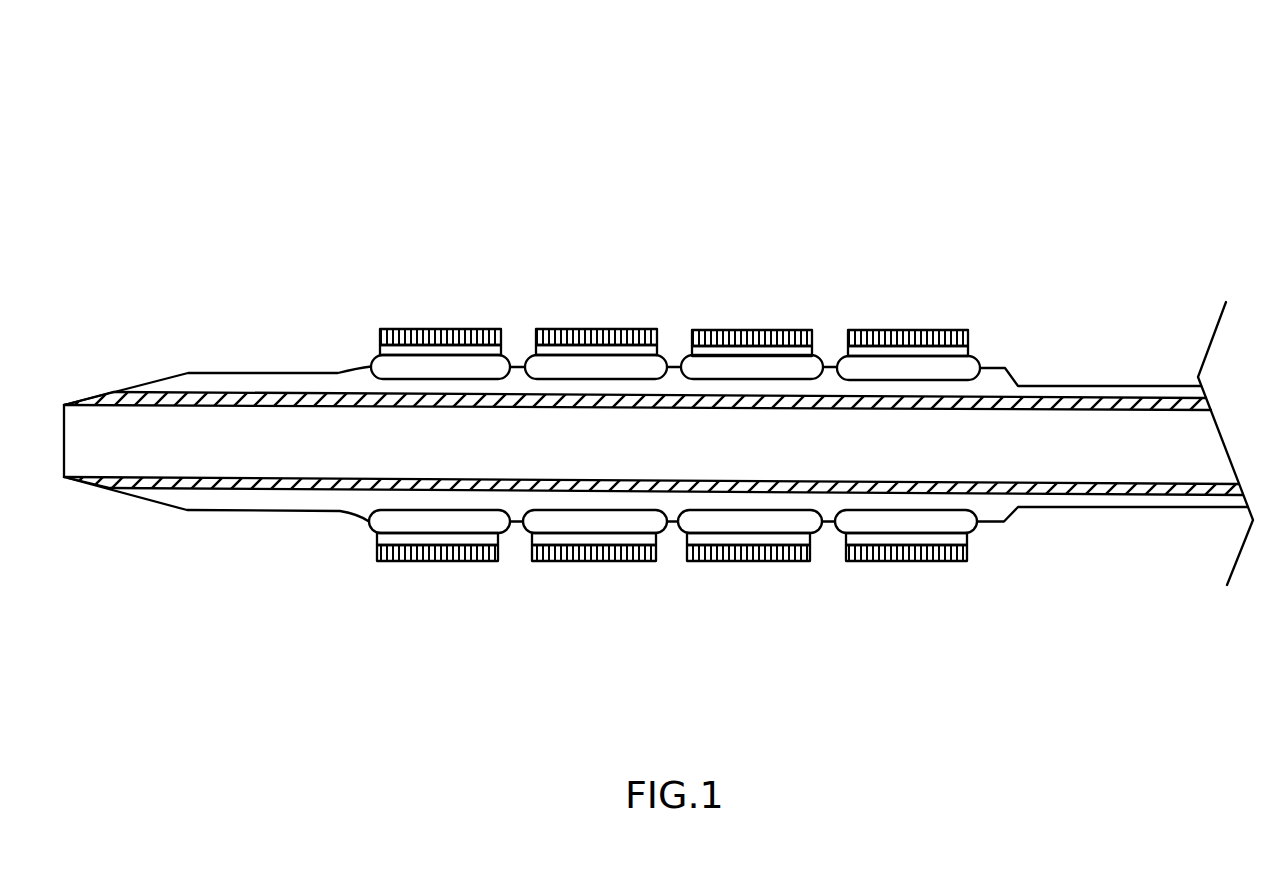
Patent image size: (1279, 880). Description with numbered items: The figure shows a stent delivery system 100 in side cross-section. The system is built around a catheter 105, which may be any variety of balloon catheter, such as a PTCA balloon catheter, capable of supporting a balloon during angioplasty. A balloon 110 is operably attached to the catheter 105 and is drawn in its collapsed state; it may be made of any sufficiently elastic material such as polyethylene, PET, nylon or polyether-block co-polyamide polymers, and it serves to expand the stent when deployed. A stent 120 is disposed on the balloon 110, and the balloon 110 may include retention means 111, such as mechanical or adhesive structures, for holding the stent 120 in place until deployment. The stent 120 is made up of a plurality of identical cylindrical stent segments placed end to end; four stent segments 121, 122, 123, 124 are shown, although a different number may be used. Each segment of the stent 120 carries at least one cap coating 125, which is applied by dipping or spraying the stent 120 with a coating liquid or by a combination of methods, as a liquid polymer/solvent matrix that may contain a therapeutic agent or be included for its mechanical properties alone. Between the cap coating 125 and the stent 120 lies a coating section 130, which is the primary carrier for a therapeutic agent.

The stent delivery system 100 is at (302, 157).
The catheter 105 is at (178, 485).
The balloon 110 is at (265, 500).
The retention means 111 is at (988, 512).
The stent 120 is at (992, 345).
The stent segment 121 is at (407, 520).
The stent segment 122 is at (578, 523).
The stent segment 123 is at (715, 524).
The stent segment 124 is at (872, 524).
The cap coating 125 is at (463, 345).
The coating section 130 is at (418, 351).